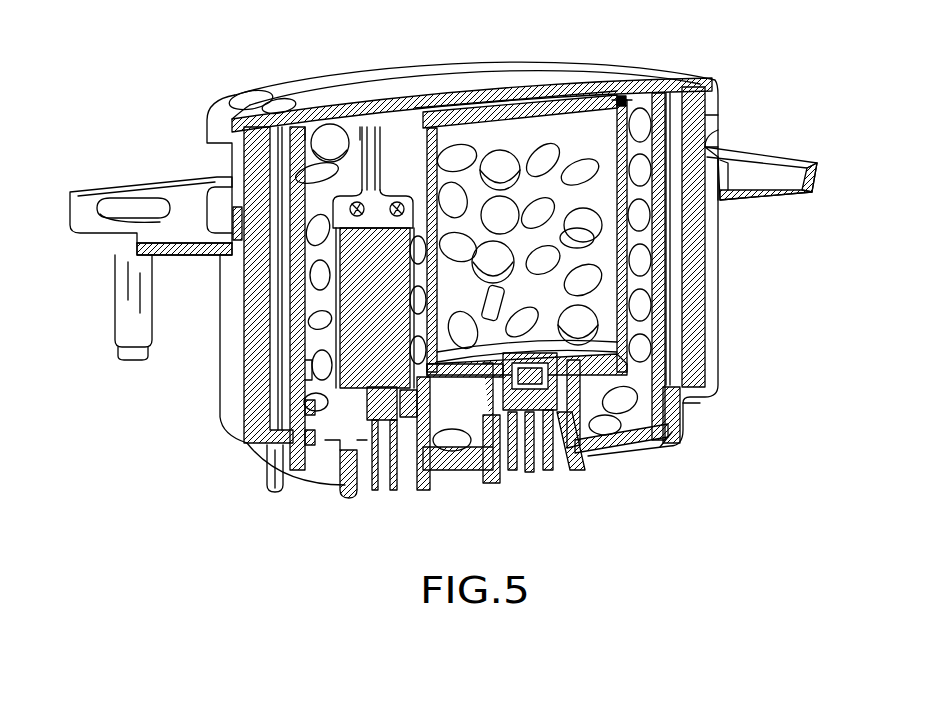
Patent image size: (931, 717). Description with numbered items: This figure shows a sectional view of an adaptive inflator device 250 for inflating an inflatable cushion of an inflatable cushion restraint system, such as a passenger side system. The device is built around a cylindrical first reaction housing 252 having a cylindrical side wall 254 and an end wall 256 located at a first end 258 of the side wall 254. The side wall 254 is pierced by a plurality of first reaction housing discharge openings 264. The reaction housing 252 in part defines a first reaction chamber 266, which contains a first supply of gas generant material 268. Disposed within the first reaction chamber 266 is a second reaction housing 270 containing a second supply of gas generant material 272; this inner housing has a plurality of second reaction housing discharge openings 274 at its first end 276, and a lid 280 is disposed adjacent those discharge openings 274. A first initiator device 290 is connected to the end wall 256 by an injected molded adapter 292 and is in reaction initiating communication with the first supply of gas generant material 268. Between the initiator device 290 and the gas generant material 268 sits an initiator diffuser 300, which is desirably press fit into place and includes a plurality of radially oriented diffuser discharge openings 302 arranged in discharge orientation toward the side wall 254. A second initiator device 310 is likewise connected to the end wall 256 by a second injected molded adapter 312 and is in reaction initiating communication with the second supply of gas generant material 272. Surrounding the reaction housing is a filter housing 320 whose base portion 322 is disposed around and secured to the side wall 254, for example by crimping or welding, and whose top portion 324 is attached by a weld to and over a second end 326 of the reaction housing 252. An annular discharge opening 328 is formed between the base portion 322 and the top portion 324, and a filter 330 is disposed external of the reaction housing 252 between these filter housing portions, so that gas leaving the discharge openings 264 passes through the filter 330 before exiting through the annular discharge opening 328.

The adaptive inflator device 250 is at (148, 464).
The first reaction housing 252 is at (280, 310).
The side wall 254 is at (293, 347).
The end wall 256 is at (640, 452).
The first end 258 is at (672, 430).
The first reaction housing discharge openings 264 is at (325, 446).
The first reaction chamber 266 is at (345, 115).
The first supply of gas generant material 268 is at (307, 172).
The second reaction housing 270 is at (617, 190).
The second supply of gas generant material 272 is at (590, 157).
The second reaction housing discharge openings 274 is at (413, 133).
The first end 276 is at (622, 98).
The lid 280 is at (516, 123).
The first initiator device 290 is at (397, 447).
The injected molded adapter 292 is at (363, 475).
The initiator diffuser 300 is at (280, 277).
The diffuser discharge openings 302 is at (347, 208).
The second initiator device 310 is at (550, 402).
The second injected molded adapter 312 is at (512, 440).
The filter housing 320 is at (728, 263).
The base portion 322 is at (720, 337).
The top portion 324 is at (710, 77).
The second end 326 is at (657, 78).
The annular discharge opening 328 is at (720, 115).
The filter 330 is at (698, 240).